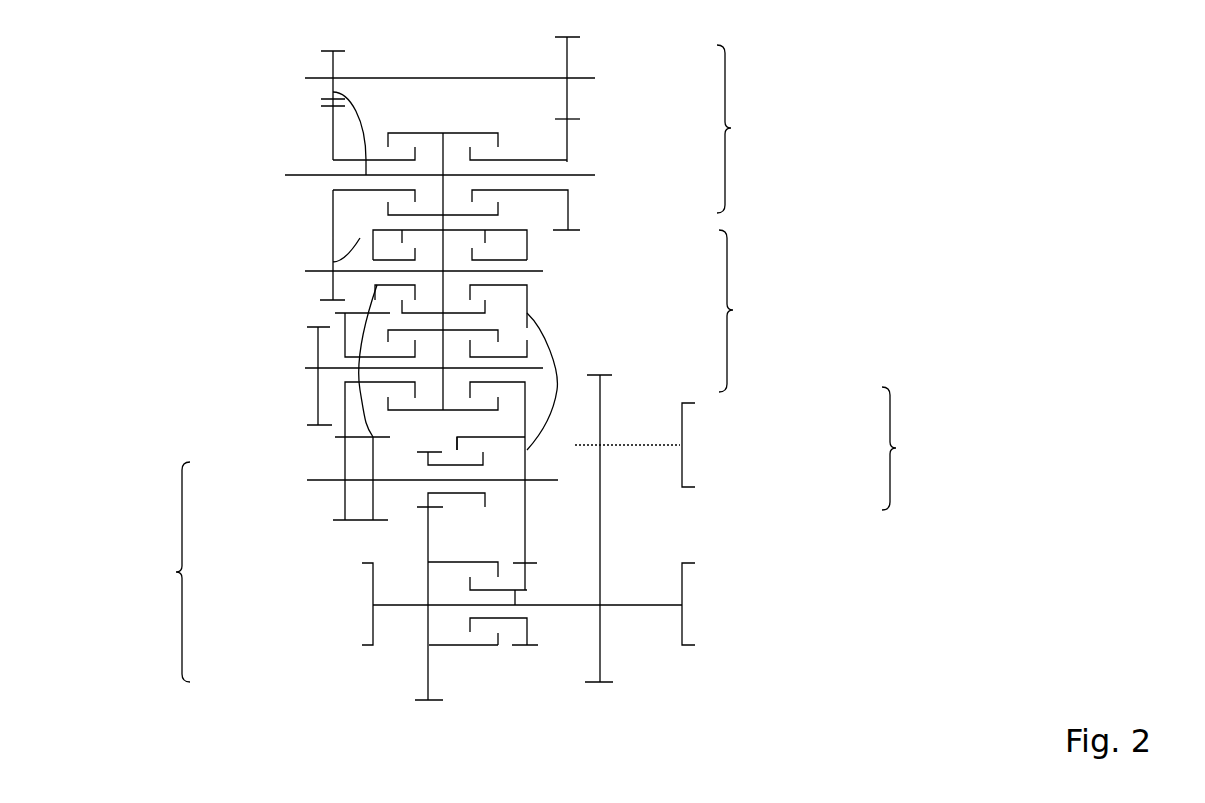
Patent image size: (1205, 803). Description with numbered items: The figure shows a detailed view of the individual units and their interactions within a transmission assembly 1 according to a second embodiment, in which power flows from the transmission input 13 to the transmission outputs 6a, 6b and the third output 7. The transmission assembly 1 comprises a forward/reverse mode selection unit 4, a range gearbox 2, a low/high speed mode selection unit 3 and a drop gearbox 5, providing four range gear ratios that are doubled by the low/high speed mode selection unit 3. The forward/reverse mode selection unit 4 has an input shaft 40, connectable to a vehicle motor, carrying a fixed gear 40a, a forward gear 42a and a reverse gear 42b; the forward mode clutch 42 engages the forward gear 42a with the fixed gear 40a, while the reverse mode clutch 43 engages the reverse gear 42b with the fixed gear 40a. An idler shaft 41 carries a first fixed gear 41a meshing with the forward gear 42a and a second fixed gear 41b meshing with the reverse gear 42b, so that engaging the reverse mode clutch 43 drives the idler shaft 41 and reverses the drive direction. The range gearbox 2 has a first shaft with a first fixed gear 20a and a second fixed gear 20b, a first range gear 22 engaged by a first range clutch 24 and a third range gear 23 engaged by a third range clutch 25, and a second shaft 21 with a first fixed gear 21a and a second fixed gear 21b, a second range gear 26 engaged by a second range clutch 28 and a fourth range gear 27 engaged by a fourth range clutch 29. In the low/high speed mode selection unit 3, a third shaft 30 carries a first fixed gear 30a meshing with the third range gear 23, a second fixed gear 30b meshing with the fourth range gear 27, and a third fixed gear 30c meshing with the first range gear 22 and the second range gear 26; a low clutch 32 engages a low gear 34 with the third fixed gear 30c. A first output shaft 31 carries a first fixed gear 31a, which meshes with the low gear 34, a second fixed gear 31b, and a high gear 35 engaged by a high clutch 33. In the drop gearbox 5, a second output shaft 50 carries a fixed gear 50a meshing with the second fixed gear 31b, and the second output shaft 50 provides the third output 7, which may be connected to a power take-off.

The transmission assembly 1 is at (803, 58).
The range gearbox 2 is at (535, 311).
The low/high speed mode selection unit 3 is at (169, 572).
The forward/reverse mode selection unit 4 is at (737, 129).
The drop gearbox 5 is at (904, 448).
The third output 7 is at (747, 433).
The transmission input 13 is at (282, 175).
The first fixed gear 20a is at (332, 258).
The second fixed gear 20b is at (443, 233).
The second shaft 21 is at (537, 368).
The first fixed gear 21a is at (318, 353).
The second fixed gear 21b is at (460, 352).
The first range gear 22 is at (527, 251).
The third range gear 23 is at (373, 232).
The first range clutch 24 is at (485, 230).
The third range clutch 25 is at (402, 230).
The second range gear 26 is at (510, 397).
The fourth range gear 27 is at (345, 400).
The second range clutch 28 is at (490, 325).
The fourth range clutch 29 is at (388, 332).
The third shaft 30 is at (322, 477).
The first fixed gear 30a is at (345, 447).
The second fixed gear 30b is at (373, 486).
The third fixed gear 30c is at (528, 498).
The first output shaft 31 is at (565, 605).
The first fixed gear 31a is at (428, 532).
The second fixed gear 31b is at (600, 570).
The low clutch 32 is at (463, 437).
The high clutch 33 is at (495, 562).
The low gear 34 is at (430, 452).
The high gear 35 is at (530, 576).
The input shaft 40 is at (583, 175).
The fixed gear 40a is at (443, 137).
The idler shaft 41 is at (423, 78).
The first fixed gear 41a is at (337, 50).
The second fixed gear 41b is at (567, 62).
The forward mode clutch 42 is at (402, 132).
The forward gear 42a is at (333, 123).
The reverse gear 42b is at (567, 145).
The reverse mode clutch 43 is at (480, 132).
The second output shaft 50 is at (645, 442).
The fixed gear 50a is at (603, 417).
The transmission output 6a is at (322, 618).
The transmission output 6b is at (712, 658).